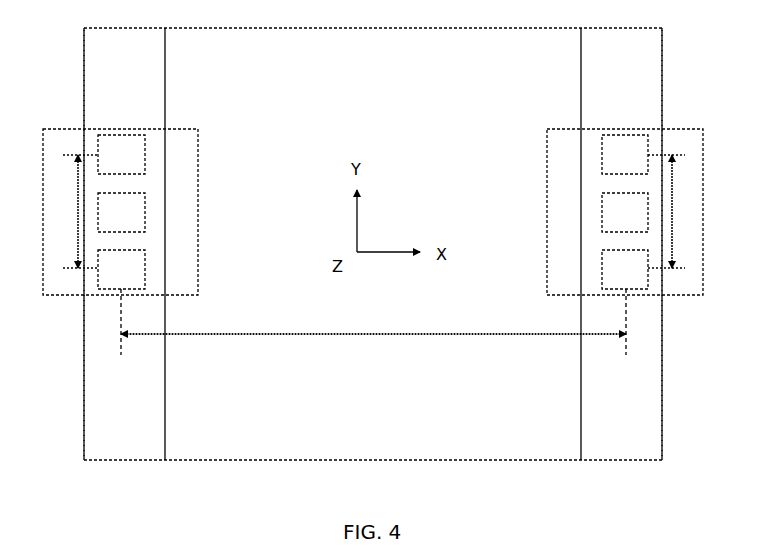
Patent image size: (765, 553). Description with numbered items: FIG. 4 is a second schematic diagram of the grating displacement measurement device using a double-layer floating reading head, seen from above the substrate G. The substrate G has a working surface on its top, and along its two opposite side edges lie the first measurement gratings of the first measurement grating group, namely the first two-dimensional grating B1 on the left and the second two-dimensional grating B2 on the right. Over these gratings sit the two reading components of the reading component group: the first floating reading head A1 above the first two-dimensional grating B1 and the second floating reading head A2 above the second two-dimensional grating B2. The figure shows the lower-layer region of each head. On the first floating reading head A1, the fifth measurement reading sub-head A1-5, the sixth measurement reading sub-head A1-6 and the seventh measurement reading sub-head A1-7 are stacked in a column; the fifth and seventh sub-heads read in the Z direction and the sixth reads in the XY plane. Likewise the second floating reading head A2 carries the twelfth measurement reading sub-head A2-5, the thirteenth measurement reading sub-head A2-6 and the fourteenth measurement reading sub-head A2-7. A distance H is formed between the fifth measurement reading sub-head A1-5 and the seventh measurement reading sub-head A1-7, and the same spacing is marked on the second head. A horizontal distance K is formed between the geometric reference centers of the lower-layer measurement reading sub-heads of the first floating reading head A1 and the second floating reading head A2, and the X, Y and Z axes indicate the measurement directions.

The substrate G is at (373, 244).
The first floating reading head A1 is at (113, 200).
The second floating reading head A2 is at (625, 201).
The fifth measurement reading sub-head A1-5 is at (143, 154).
The sixth measurement reading sub-head A1-6 is at (143, 212).
The seventh measurement reading sub-head A1-7 is at (143, 269).
The twelfth measurement reading sub-head A2-5 is at (602, 154).
The thirteenth measurement reading sub-head A2-6 is at (602, 212).
The fourteenth measurement reading sub-head A2-7 is at (602, 269).
The first two-dimensional grating B1 is at (124, 244).
The second two-dimensional grating B2 is at (621, 244).
The distance H is at (372, 211).
The horizontal distance K is at (373, 327).